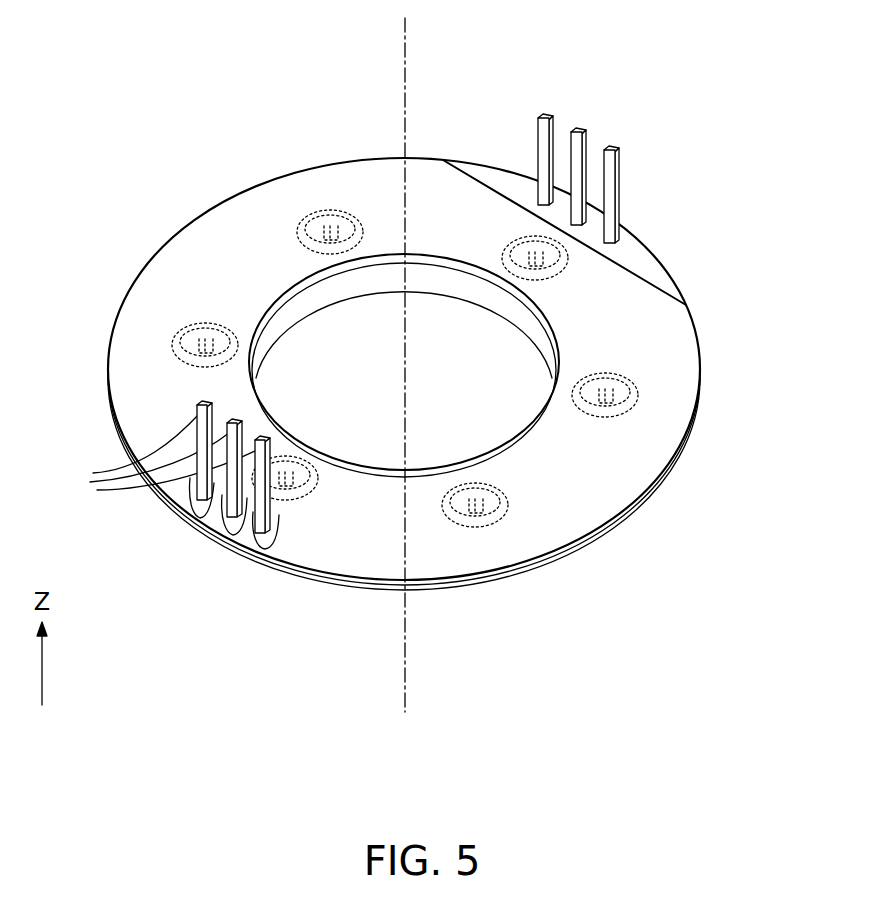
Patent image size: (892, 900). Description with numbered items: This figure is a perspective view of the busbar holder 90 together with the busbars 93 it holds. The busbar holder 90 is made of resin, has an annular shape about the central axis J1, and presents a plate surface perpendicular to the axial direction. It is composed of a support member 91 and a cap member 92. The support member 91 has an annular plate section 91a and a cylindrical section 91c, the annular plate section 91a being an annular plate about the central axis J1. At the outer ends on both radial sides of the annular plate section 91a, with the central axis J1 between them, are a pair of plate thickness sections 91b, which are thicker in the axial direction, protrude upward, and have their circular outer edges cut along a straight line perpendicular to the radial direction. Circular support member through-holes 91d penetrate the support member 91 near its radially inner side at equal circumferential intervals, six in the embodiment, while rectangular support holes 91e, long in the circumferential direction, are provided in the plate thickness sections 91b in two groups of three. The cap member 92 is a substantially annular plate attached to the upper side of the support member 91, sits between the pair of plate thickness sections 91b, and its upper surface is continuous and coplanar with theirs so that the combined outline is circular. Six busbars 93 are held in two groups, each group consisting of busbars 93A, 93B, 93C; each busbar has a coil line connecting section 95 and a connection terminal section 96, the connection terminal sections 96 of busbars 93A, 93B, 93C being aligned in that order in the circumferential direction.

The busbar holder 90 is at (472, 373).
The support member 91 is at (480, 373).
The cap member 92 is at (680, 341).
The annular plate section 91a is at (378, 586).
The plate thickness section 91b is at (636, 256).
The cylindrical section 91c is at (380, 277).
The support member through-hole 91d is at (596, 420).
The support hole 91e is at (193, 510).
The busbar 93 is at (409, 274).
The busbar 93A is at (268, 423).
The busbar 93B is at (232, 405).
The busbar 93C is at (203, 390).
The coil line connecting section 95 is at (565, 270).
The connection terminal section 96 is at (162, 464).
The central axis J1 is at (408, 70).